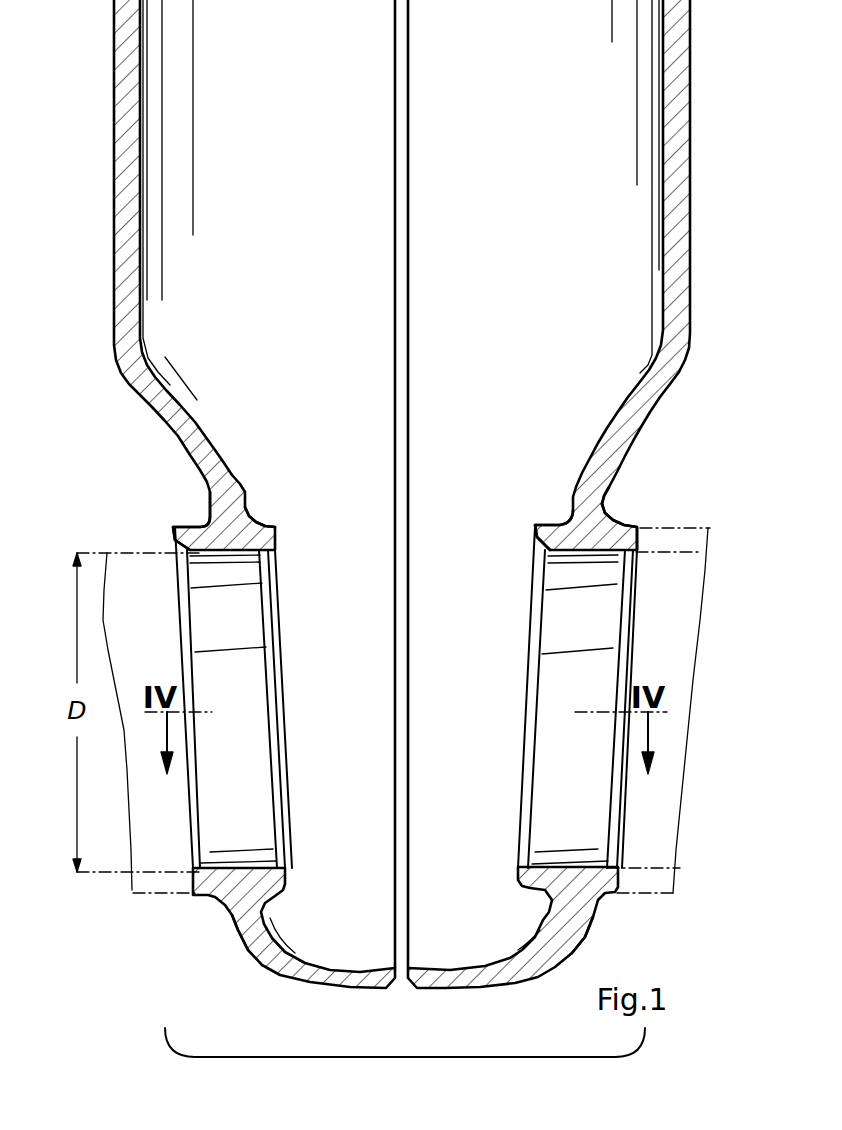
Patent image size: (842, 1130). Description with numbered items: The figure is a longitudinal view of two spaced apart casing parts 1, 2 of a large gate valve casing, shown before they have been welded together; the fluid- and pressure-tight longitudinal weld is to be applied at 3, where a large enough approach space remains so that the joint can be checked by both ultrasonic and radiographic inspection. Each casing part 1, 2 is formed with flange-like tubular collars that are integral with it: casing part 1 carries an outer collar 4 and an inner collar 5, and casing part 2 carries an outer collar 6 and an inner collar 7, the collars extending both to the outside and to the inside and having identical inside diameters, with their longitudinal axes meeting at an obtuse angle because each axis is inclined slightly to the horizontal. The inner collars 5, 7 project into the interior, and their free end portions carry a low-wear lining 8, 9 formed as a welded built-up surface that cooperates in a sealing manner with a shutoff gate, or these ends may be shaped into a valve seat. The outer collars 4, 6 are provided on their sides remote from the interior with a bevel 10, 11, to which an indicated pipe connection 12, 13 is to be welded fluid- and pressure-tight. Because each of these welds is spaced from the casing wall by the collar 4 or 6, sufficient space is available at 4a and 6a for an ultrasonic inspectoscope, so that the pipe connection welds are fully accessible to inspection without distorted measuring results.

The casing part 1 is at (125, 323).
The casing part 2 is at (685, 308).
The weld location 3 is at (400, 988).
The outer tubular collar 4 is at (185, 525).
The approach space 4a is at (215, 502).
The inner tubular collar 5 is at (253, 522).
The outer tubular collar 6 is at (633, 528).
The approach space 6a is at (595, 509).
The inner tubular collar 7 is at (558, 527).
The low-wear lining 8 is at (275, 537).
The low-wear lining 9 is at (535, 533).
The bevel 10 is at (186, 888).
The bevel 11 is at (640, 540).
The pipe connection 12 is at (126, 535).
The pipe connection 13 is at (657, 880).